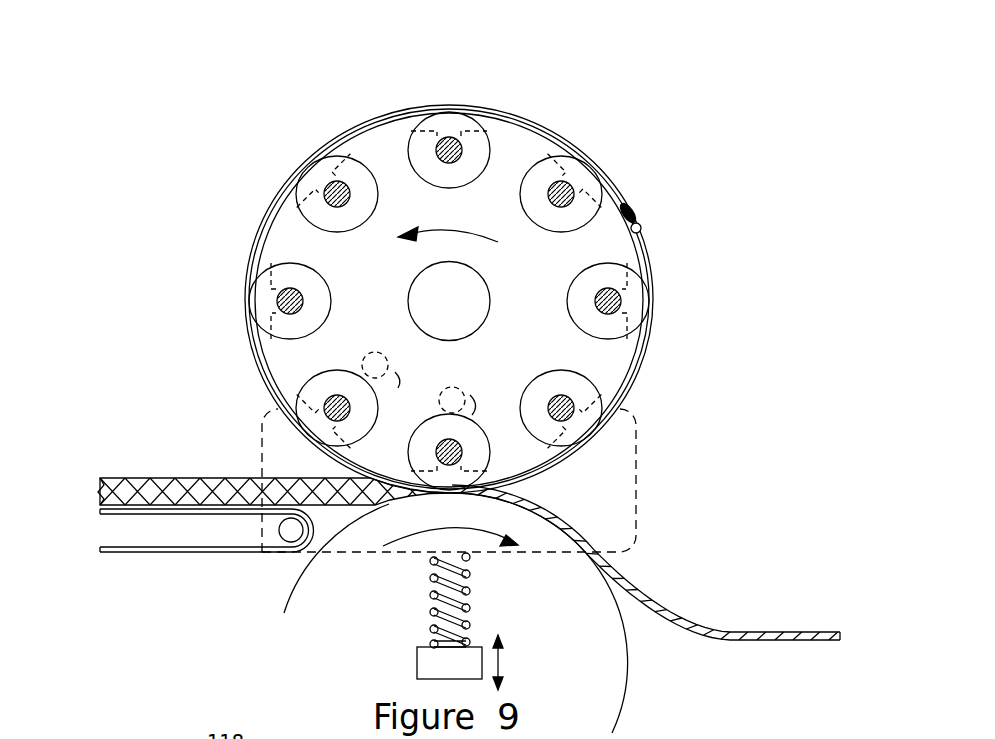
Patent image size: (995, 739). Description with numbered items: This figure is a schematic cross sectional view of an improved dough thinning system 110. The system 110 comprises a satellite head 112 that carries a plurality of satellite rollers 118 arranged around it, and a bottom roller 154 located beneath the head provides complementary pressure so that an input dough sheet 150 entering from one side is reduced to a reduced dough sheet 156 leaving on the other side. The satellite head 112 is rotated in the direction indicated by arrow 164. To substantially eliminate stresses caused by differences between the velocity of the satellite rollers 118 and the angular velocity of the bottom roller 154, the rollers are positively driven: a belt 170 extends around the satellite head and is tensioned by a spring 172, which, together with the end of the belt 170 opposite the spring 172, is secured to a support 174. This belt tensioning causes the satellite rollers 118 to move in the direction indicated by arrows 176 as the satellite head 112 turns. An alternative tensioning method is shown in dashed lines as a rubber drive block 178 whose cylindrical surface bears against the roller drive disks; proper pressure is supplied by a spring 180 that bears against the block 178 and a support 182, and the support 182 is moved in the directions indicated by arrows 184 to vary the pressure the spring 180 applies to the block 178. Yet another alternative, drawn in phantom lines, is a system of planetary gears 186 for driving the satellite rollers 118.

The dough thinning system 110 is at (193, 160).
The satellite head 112 is at (530, 142).
The satellite rollers 118 is at (414, 131).
The input dough sheet 150 is at (154, 478).
The bottom roller 154 is at (375, 597).
The reduced dough sheet 156 is at (664, 618).
The arrow 164 is at (447, 230).
The belt 170 is at (302, 158).
The spring 172 is at (632, 208).
The support 174 is at (641, 229).
The arrows 176 is at (498, 455).
The rubber drive block 178 is at (637, 486).
The spring 180 is at (470, 630).
The support 182 is at (417, 650).
The arrows 184 is at (504, 668).
The planetary gears 186 is at (372, 352).